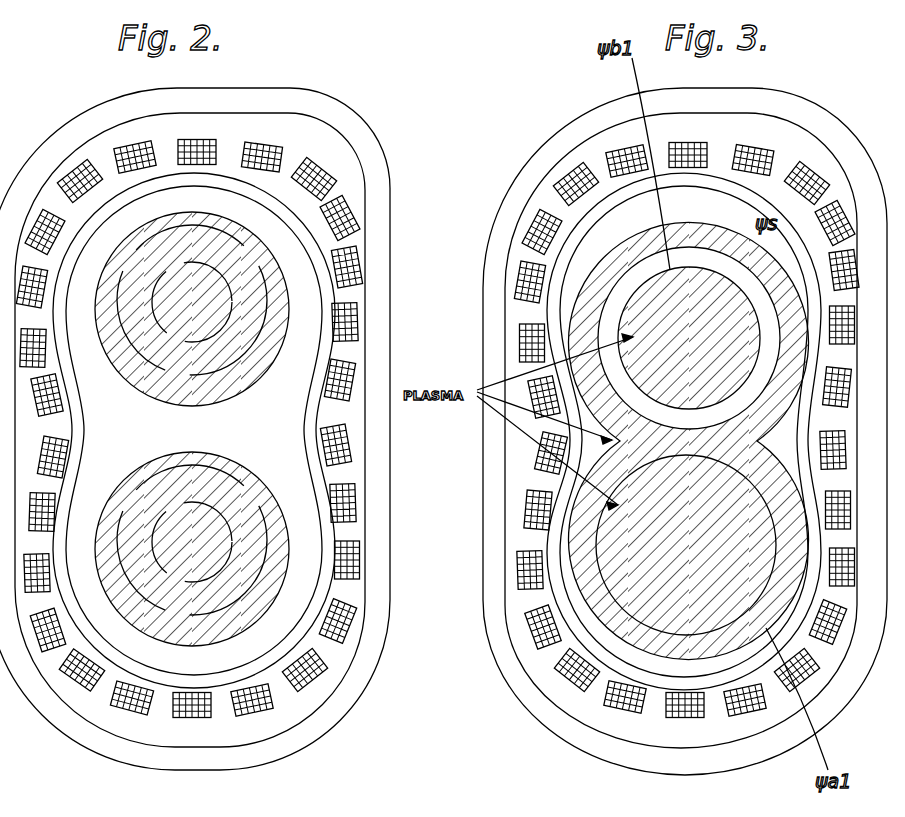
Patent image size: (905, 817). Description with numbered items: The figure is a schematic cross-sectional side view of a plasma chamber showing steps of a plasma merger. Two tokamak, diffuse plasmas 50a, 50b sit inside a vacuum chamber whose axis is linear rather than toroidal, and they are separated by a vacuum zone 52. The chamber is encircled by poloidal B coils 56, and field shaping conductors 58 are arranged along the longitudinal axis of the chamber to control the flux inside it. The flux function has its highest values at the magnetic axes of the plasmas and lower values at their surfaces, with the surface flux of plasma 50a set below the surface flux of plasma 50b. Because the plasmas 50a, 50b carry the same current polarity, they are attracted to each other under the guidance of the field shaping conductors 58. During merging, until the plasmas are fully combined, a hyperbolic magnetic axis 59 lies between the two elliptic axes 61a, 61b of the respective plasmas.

In FIG. 2, the tokamak diffuse plasma 50a is at (242, 626).
In FIG. 3, the tokamak diffuse plasma 50a is at (686, 545).
In FIG. 2, the tokamak diffuse plasma 50b is at (217, 220).
In FIG. 3, the tokamak diffuse plasma 50b is at (689, 338).
In FIG. 2, the vacuum zone 52 is at (194, 430).
In FIG. 2, the poloidal B coils 56 is at (373, 143).
In FIG. 3, the poloidal B coils 56 is at (535, 147).
In FIG. 2, the field shaping conductors 58 is at (350, 263).
In FIG. 3, the field shaping conductors 58 is at (522, 337).
In FIG. 3, the hyperbolic magnetic axis 59 is at (684, 447).
In FIG. 3, the elliptic axis 61a is at (685, 543).
In FIG. 3, the elliptic axis 61b is at (688, 340).